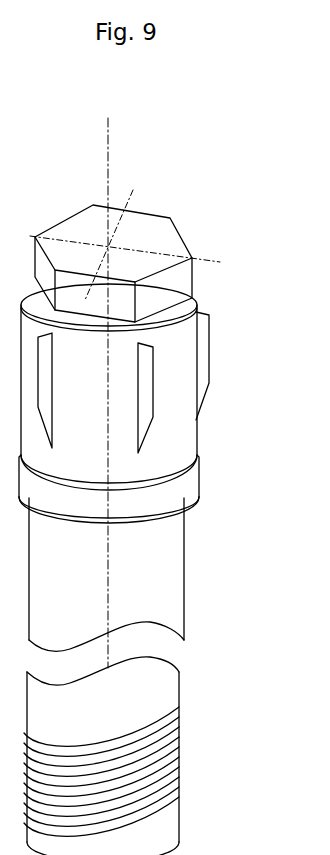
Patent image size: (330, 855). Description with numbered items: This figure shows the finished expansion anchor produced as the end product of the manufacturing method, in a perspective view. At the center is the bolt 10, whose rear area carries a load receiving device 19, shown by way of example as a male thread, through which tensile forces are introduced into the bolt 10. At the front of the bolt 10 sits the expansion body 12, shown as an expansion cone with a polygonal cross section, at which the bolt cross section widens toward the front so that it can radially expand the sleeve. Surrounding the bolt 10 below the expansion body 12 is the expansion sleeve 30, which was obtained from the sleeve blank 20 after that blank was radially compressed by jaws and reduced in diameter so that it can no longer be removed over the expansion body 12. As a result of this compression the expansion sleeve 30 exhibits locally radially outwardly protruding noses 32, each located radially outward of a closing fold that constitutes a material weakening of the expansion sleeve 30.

The expansion body 12 is at (173, 283).
The sleeve blank 20 is at (100, 418).
The expansion sleeve 30 is at (135, 418).
The nose 32 is at (208, 343).
The bolt 10 is at (163, 603).
The load receiving device 19 is at (163, 762).